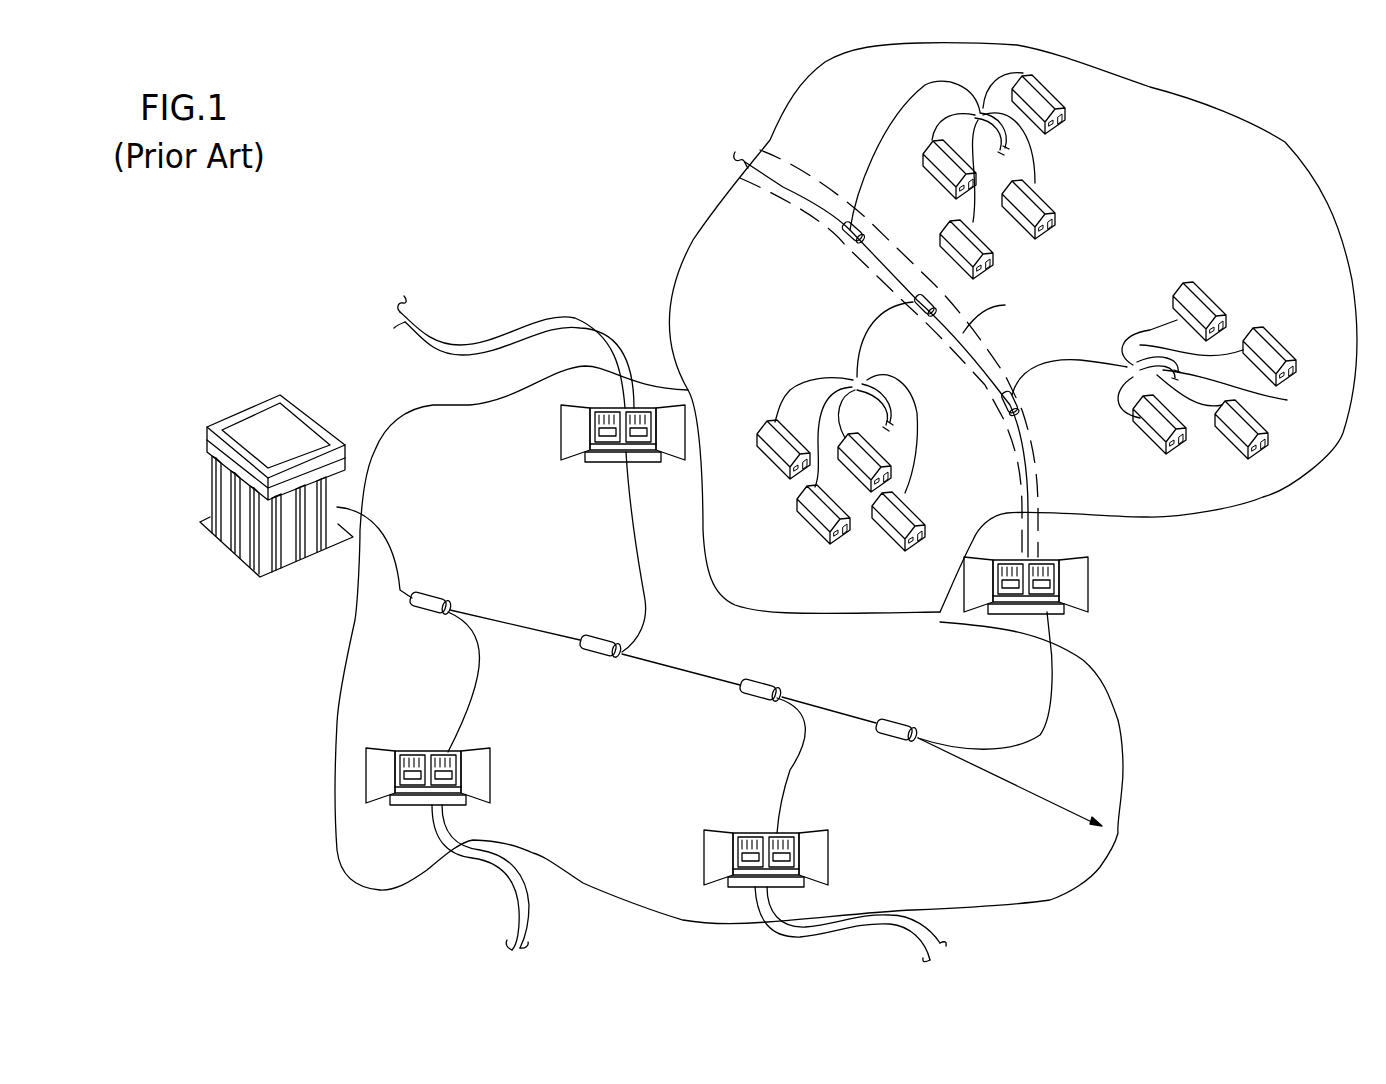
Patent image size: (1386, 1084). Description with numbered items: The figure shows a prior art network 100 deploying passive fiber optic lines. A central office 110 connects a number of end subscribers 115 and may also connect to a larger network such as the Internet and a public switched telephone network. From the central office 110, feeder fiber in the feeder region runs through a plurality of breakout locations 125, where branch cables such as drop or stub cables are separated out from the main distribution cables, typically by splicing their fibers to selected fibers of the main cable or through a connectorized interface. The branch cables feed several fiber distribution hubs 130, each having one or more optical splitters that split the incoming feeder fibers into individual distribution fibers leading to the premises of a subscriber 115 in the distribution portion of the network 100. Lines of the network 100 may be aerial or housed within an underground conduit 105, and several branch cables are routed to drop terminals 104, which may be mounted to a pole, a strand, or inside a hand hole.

The network 100 is at (440, 218).
The central office 110 is at (212, 478).
The fiber distribution hub 130 is at (683, 457).
The breakout location 125 is at (430, 593).
The conduit 105 is at (1030, 447).
The drop terminal 104 is at (978, 107).
The end subscriber 115 is at (1037, 197).